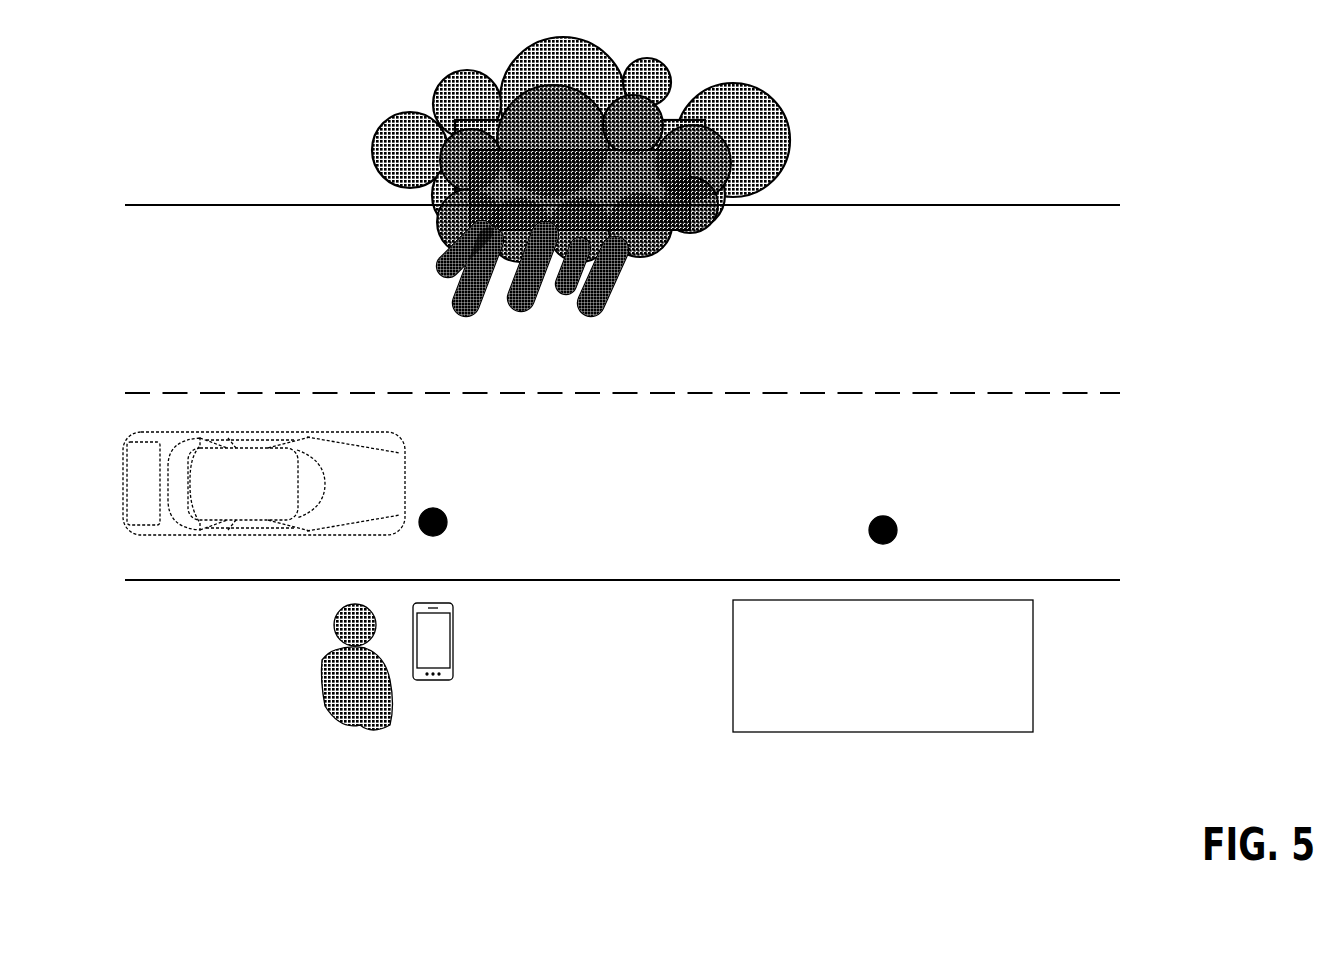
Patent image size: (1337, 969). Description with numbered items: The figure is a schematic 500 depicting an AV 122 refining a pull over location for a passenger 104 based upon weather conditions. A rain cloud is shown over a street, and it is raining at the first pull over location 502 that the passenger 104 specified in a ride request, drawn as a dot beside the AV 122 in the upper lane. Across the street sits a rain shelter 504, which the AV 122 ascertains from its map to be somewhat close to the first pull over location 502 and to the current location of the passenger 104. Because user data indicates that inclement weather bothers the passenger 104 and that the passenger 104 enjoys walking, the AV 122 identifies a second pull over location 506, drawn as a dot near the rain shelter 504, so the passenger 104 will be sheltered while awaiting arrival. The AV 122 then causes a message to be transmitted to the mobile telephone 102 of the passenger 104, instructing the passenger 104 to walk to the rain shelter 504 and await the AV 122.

The schematic 500 is at (998, 155).
The AV 122 is at (282, 496).
The first pull over location 502 is at (444, 531).
The second pull over location 506 is at (870, 522).
The rain shelter 504 is at (995, 722).
The passenger 104 is at (324, 667).
The mobile telephone 102 is at (452, 657).